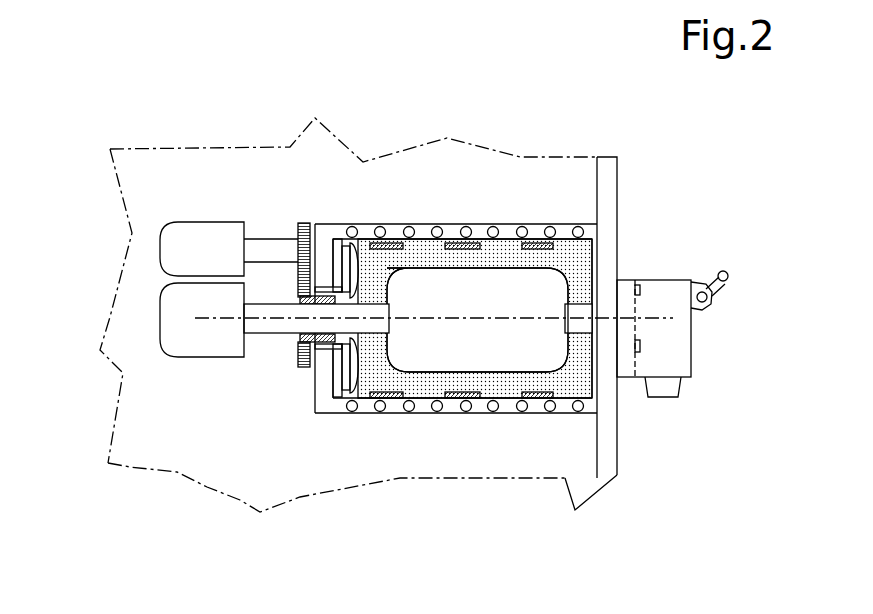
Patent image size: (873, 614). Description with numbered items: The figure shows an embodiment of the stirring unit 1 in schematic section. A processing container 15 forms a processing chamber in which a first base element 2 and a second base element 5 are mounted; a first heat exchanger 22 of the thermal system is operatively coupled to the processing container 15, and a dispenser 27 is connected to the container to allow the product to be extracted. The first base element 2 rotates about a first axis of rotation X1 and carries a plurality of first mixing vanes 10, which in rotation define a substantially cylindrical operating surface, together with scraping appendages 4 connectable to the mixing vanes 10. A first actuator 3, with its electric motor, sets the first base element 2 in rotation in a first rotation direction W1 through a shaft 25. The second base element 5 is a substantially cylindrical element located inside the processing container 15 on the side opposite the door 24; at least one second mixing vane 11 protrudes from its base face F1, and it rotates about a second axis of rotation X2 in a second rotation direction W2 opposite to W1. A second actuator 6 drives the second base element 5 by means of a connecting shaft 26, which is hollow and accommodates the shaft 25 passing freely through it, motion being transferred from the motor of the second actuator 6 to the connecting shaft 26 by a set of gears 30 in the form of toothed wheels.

The stirring unit 1 is at (432, 163).
The first base element 2 is at (493, 272).
The first actuator 3 is at (156, 330).
The scraping appendages 4 is at (390, 225).
The second base element 5 is at (360, 364).
The second actuator 6 is at (199, 220).
The first mixing vanes 10 is at (590, 260).
The second mixing vane 11 is at (350, 242).
The processing container 15 is at (608, 382).
The first heat exchanger 22 is at (566, 423).
The door 24 is at (628, 265).
The shaft 25 is at (290, 334).
The connecting shaft 26 is at (323, 357).
The dispenser 27 is at (708, 345).
The set of gears 30 is at (306, 267).
The base face F1 is at (361, 283).
The first rotation direction W1 is at (281, 291).
The second rotation direction W2 is at (279, 272).
The first axis of rotation X1 is at (510, 318).
The second axis of rotation X2 is at (217, 320).